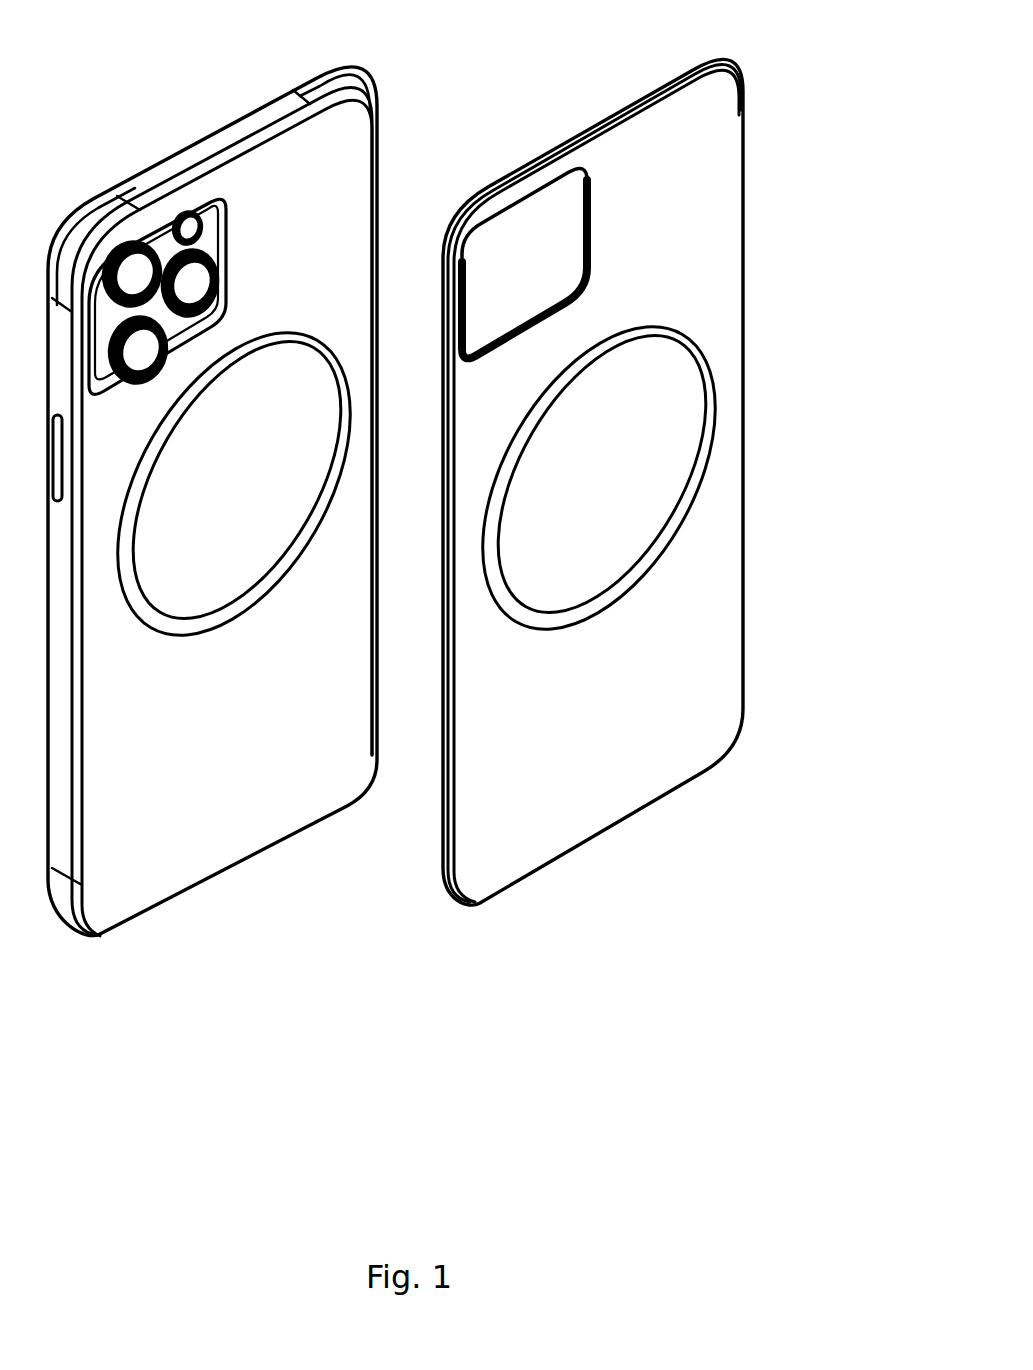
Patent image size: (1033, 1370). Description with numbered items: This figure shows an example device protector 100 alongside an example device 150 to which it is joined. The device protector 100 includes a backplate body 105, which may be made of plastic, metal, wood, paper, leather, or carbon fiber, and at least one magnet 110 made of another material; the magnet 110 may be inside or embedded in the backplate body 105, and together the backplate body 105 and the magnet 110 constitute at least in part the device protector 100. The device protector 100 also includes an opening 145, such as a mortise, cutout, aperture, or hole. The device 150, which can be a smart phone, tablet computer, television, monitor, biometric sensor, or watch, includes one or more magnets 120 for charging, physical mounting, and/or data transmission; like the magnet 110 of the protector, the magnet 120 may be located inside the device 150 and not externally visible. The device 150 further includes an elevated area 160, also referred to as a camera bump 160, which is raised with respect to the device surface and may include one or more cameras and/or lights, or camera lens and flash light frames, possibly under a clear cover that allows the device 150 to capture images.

The device protector 100 is at (714, 63).
The backplate body 105 is at (710, 527).
The magnet 110 is at (713, 418).
The magnet 120 is at (230, 615).
The opening 145 is at (563, 193).
The device 150 is at (368, 96).
The elevated area 160 is at (228, 281).